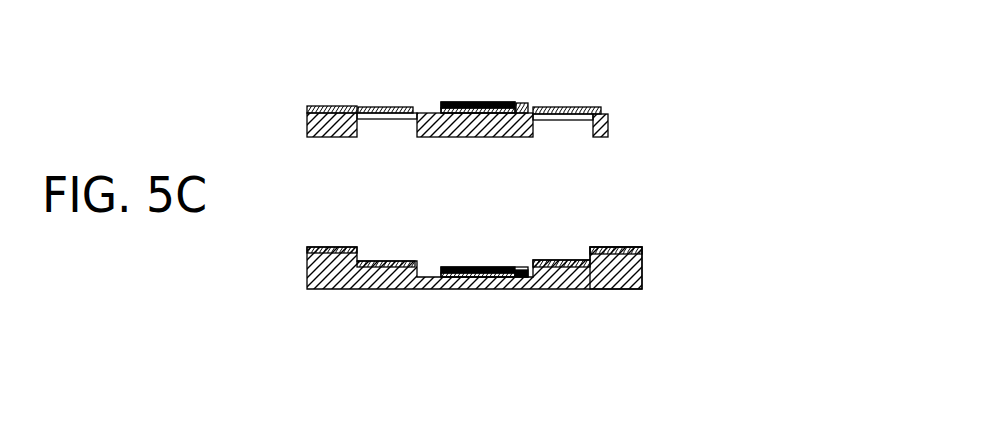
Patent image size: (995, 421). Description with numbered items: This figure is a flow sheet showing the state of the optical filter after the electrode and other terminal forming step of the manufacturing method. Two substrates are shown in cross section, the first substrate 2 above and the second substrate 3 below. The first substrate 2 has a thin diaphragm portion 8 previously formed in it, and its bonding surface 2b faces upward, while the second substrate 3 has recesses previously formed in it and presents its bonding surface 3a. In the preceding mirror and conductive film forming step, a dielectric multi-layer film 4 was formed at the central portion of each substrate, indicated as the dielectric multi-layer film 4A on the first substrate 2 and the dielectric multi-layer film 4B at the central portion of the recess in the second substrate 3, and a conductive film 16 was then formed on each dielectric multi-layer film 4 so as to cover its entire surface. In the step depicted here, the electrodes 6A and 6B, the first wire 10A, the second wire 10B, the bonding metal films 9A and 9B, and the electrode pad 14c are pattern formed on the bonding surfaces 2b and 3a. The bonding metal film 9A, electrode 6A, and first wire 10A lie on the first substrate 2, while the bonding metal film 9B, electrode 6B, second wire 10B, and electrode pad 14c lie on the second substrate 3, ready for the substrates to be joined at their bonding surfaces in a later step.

The first substrate 2 is at (608, 119).
The bonding surface of first substrate 2b is at (602, 107).
The second substrate 3 is at (643, 277).
The bonding surface of second substrate 3a is at (616, 247).
The dielectric multi-layer film 4 is at (468, 102).
The dielectric multi-layer film 4A is at (446, 101).
The dielectric multi-layer film 4B is at (504, 258).
The electrode 6A is at (364, 107).
The electrode 6B is at (372, 261).
The diaphragm portion 8 is at (378, 119).
The bonding metal film 9A is at (313, 106).
The bonding metal film 9B is at (322, 247).
The first wire 10A is at (548, 107).
The second wire 10B is at (546, 260).
The electrode pad 14c is at (643, 250).
The conductive film 16 is at (500, 102).